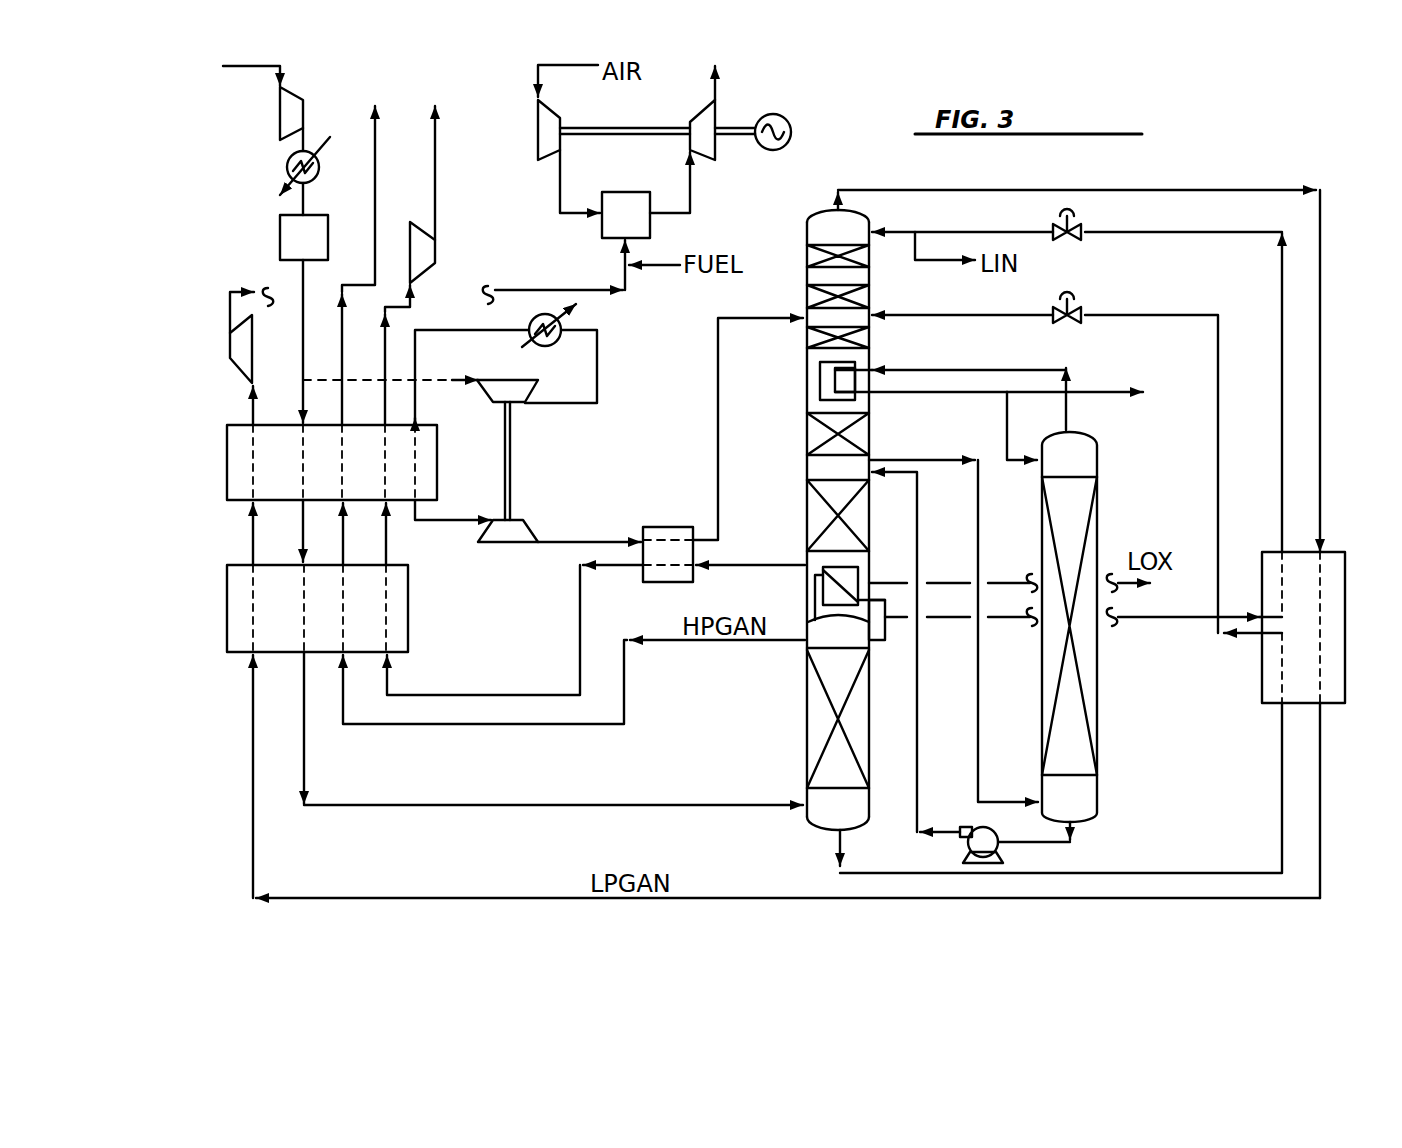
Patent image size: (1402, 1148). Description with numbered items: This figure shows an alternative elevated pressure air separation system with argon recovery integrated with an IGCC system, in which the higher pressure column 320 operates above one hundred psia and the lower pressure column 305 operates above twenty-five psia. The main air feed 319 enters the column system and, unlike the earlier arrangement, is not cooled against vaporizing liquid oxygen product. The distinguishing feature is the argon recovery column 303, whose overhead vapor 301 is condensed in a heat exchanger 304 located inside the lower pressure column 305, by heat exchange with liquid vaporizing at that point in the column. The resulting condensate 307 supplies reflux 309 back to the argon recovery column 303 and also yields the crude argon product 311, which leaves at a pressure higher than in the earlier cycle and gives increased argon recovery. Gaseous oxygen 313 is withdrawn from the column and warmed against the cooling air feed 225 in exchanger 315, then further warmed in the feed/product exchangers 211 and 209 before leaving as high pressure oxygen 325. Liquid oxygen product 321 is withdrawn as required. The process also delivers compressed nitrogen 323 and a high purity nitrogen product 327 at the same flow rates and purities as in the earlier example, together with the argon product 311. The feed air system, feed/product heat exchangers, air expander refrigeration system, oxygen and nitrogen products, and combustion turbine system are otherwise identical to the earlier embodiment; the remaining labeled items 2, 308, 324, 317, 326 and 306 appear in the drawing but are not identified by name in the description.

The air compressor 2 is at (303, 272).
The compressed nitrogen 323 is at (230, 316).
The expanded air stream 308 is at (252, 403).
The exchanger 209 is at (227, 457).
The exchanger 211 is at (408, 603).
The high purity nitrogen product 327 is at (375, 197).
The high pressure oxygen 325 is at (435, 193).
The oxygen compressor 324 is at (408, 310).
The cooling air feed 225 is at (578, 542).
The exchanger 315 is at (665, 527).
The gaseous oxygen 313 is at (777, 566).
The oxygen stream to heat exchanger 317 is at (578, 634).
The main air feed 319 is at (684, 807).
The higher pressure column 320 is at (807, 719).
The air feed stream 326 is at (718, 416).
The heat exchanger 304 is at (820, 376).
The lower pressure column 305 is at (807, 470).
The overhead vapor 301 is at (997, 369).
The condensate 307 is at (972, 393).
The reflux 309 is at (996, 444).
The crude argon product 311 is at (1107, 394).
The argon recovery column 303 is at (1098, 517).
The nitrogen vent stream 306 is at (1020, 190).
The liquid oxygen product 321 is at (947, 583).